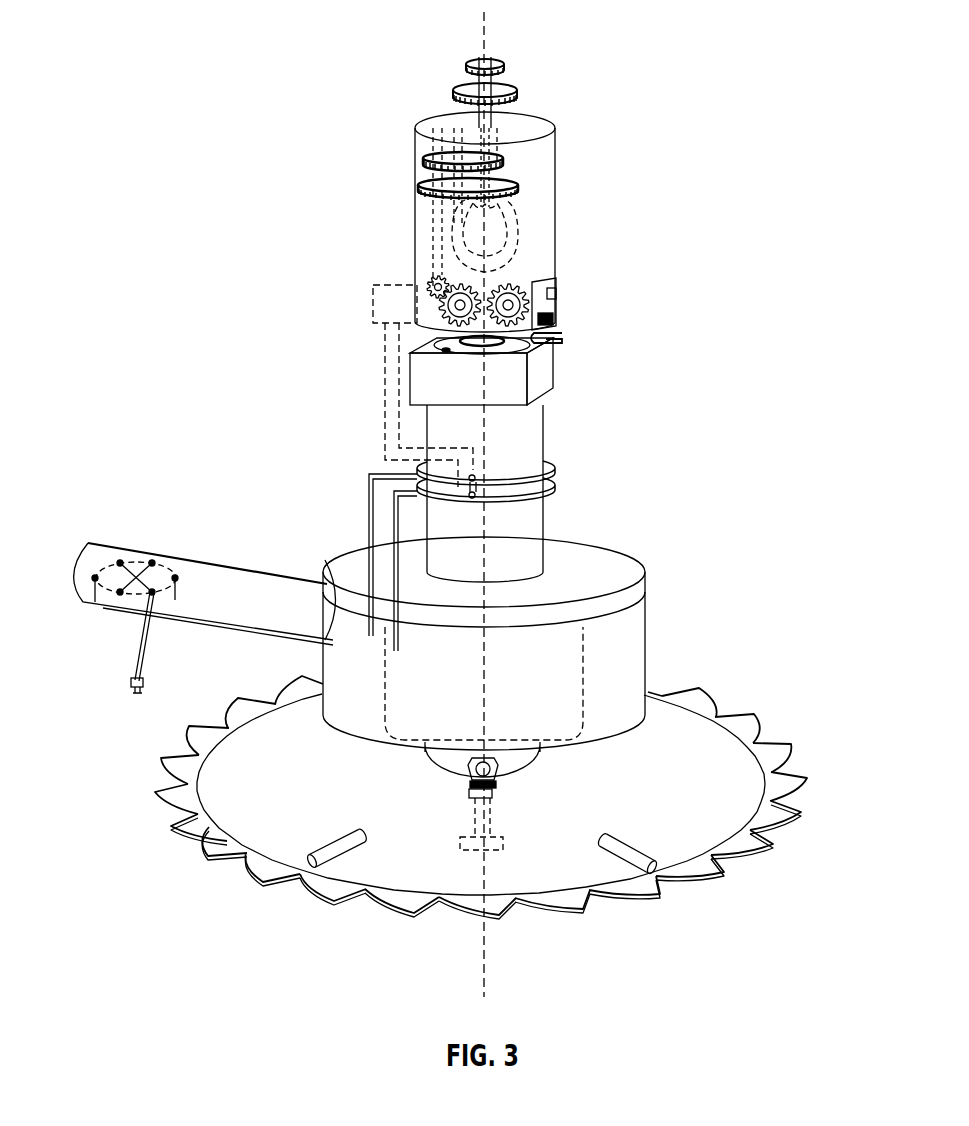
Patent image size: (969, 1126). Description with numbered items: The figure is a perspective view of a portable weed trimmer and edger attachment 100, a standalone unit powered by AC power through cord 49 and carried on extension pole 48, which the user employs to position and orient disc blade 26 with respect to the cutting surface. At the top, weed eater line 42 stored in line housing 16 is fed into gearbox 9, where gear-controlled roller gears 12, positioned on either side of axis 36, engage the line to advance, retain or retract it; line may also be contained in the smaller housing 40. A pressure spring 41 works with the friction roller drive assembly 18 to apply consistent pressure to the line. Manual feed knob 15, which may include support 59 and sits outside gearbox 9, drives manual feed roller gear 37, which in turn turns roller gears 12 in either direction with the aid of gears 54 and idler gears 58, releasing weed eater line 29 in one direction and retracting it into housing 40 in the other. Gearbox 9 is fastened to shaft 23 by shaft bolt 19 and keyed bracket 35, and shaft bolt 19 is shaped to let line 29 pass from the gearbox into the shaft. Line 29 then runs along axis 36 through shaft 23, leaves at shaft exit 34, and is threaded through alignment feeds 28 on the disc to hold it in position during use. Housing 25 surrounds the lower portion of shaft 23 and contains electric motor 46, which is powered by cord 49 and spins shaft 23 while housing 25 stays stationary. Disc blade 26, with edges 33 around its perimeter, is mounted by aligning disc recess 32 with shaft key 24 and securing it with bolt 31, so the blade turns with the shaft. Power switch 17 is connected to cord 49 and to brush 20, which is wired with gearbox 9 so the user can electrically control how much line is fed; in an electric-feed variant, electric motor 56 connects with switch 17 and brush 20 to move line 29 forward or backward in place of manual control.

The portable weed trimmer and edger attachment 100 is at (234, 34).
The manual feed knob 15 is at (456, 64).
The support 59 is at (524, 93).
The housing 40 is at (540, 124).
The idler gears 58 is at (442, 153).
The weed eater line 29 is at (537, 141).
The gears 54 is at (530, 185).
The line housing 16 is at (523, 213).
The weed eater line 42 is at (520, 247).
The gearbox 9 is at (553, 280).
The pressure spring 41 is at (555, 290).
The keyed bracket 35 is at (555, 317).
The friction roller drive assembly 18 is at (570, 330).
The electric motor 56 is at (372, 300).
The manual feed roller gear 37 is at (426, 283).
The roller gears 12 is at (425, 337).
The shaft bolt 19 is at (487, 353).
The shaft 23 is at (530, 440).
The brush 20 is at (548, 466).
The power switch 17 is at (103, 567).
The extension pole 48 is at (232, 585).
The cord 49 is at (143, 683).
The housing 25 is at (640, 612).
The electric motor 46 is at (583, 673).
The shaft exit 34 is at (497, 764).
The shaft key 24 is at (464, 785).
The disc recess 32 is at (497, 795).
The bolt 31 is at (463, 856).
The edges 33 is at (172, 824).
The disc blade 26 is at (600, 878).
The alignment feeds 28 is at (630, 852).
The axis 36 is at (486, 958).